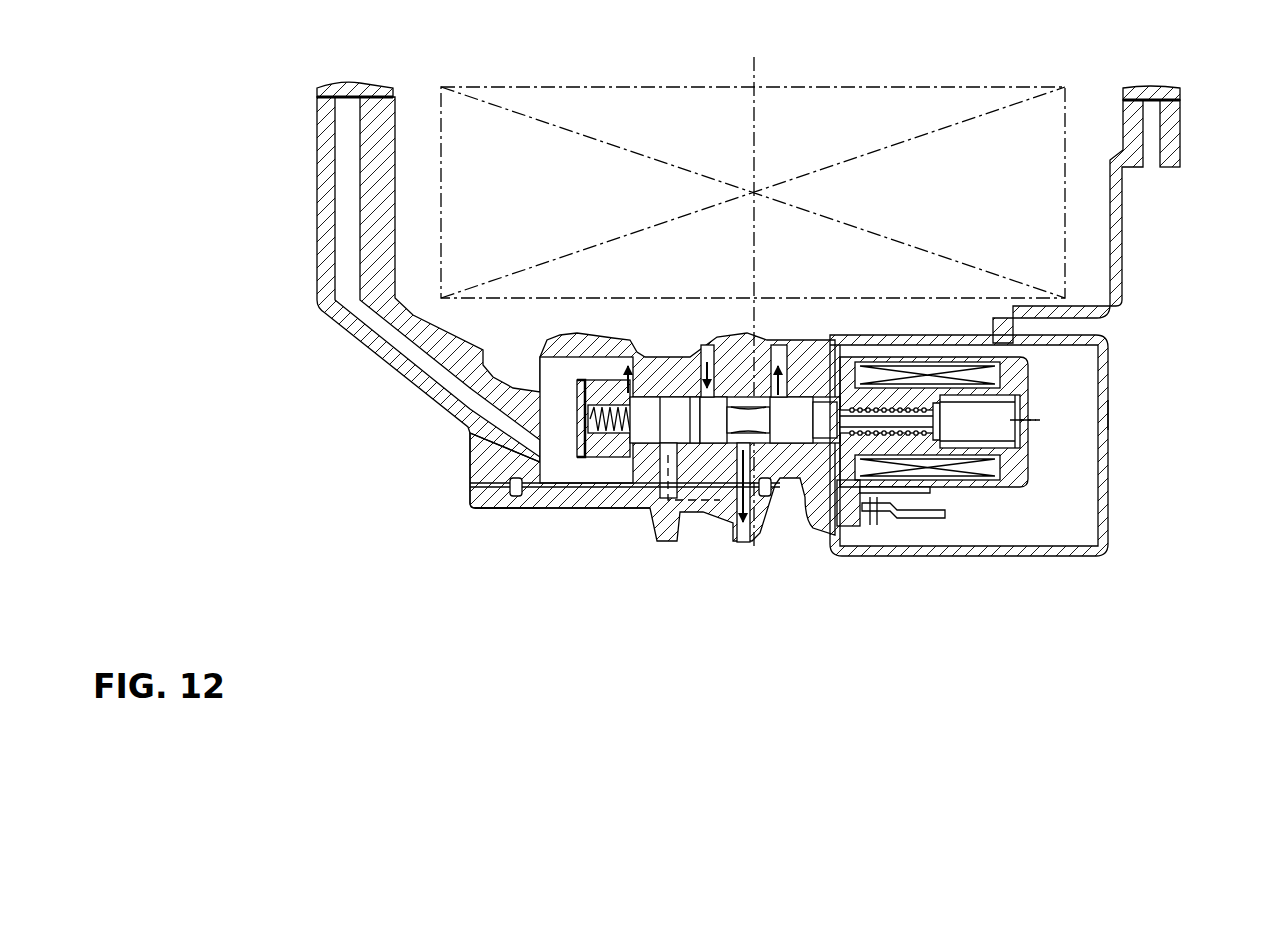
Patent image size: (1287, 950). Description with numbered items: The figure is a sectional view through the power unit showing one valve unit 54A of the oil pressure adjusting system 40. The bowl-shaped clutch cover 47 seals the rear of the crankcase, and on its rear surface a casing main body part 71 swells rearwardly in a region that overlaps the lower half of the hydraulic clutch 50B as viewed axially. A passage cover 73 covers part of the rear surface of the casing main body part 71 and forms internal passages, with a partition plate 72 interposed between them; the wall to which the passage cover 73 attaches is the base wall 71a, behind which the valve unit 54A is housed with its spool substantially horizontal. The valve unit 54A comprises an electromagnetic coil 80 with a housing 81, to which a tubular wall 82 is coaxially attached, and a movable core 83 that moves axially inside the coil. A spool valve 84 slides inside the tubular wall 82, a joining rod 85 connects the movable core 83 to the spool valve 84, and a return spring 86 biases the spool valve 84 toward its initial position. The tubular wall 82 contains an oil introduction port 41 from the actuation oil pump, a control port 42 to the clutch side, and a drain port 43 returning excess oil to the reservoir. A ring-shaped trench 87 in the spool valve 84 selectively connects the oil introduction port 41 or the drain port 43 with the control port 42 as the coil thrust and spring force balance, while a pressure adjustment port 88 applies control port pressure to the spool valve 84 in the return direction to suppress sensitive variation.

The oil pressure adjusting system 40 is at (1134, 411).
The oil introduction port 41 is at (705, 352).
The control port 42 is at (753, 550).
The drain port 43 is at (797, 352).
The clutch cover 47 is at (380, 362).
The hydraulic clutch 50B is at (1070, 203).
The valve unit 54A is at (1066, 364).
The casing main body part 71 is at (468, 450).
The base wall 71a is at (485, 508).
The partition plate 72 is at (469, 507).
The passage cover 73 is at (540, 462).
The electromagnetic coil 80 is at (982, 470).
The housing 81 is at (925, 522).
The tubular wall 82 is at (640, 490).
The movable core 83 is at (1015, 438).
The spool valve 84 is at (795, 437).
The joining rod 85 is at (853, 437).
The return spring 86 is at (578, 428).
The ring-shaped trench 87 is at (742, 410).
The pressure adjustment port 88 is at (655, 456).